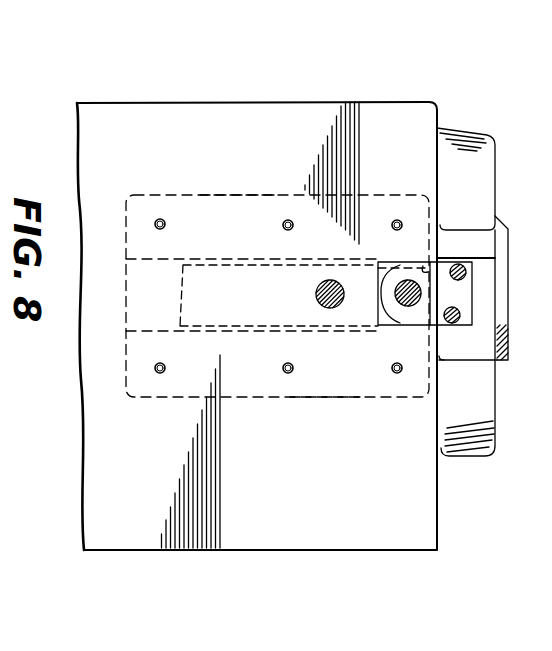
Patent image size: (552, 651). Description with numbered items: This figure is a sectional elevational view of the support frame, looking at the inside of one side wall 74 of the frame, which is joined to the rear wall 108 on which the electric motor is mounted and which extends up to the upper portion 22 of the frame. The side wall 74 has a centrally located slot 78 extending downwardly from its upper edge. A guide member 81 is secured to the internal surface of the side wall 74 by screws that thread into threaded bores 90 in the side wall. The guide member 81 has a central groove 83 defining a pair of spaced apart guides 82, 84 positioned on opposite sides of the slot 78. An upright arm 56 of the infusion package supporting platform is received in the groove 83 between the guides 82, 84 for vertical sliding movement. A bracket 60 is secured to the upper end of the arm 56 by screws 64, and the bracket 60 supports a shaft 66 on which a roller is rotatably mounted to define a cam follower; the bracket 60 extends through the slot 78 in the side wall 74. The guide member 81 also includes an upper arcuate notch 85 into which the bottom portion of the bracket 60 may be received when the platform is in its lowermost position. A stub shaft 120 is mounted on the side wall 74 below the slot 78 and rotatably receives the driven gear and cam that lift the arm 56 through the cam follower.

The rear wall 108 is at (292, 102).
The threaded bores 90 is at (159, 218).
The guide 82 is at (238, 195).
The guide member 81 is at (128, 238).
The central groove 83 is at (126, 310).
The stub shaft 120 is at (316, 292).
The upper arcuate notch 85 is at (440, 261).
The screws 64 is at (461, 311).
The slot 78 is at (503, 333).
The upstanding arm 56 is at (384, 323).
The shaft 66 is at (408, 307).
The bracket 60 is at (441, 333).
The upper portion 22 is at (491, 453).
The guide 84 is at (319, 396).
The side wall 74 is at (207, 451).